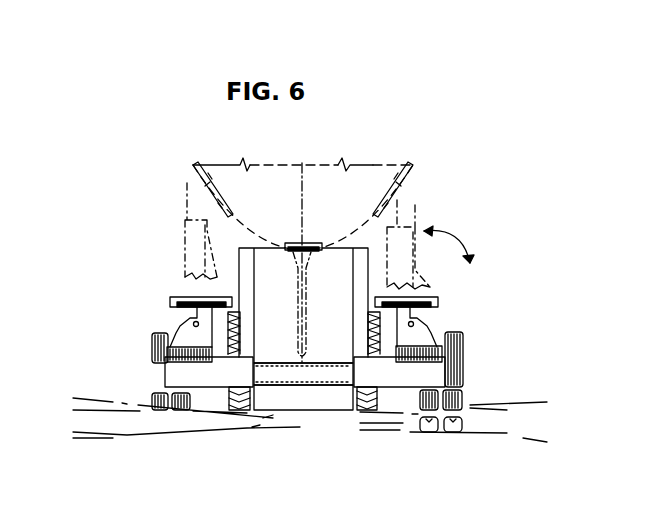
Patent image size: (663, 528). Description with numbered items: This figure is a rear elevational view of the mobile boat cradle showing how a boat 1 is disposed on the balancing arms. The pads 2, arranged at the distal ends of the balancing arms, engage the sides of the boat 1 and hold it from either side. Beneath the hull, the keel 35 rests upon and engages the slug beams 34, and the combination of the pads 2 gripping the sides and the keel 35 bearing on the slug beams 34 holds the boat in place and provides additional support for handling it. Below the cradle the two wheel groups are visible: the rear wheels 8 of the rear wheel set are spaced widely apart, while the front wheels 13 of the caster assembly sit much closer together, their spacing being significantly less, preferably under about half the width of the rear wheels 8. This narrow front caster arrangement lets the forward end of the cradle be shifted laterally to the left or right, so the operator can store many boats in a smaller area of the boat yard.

The boat 1 is at (370, 182).
The pads 2 is at (190, 171).
The wheels 8 is at (152, 333).
The wheels 13 is at (240, 327).
The slug beams 34 is at (324, 360).
The keel 35 is at (308, 300).